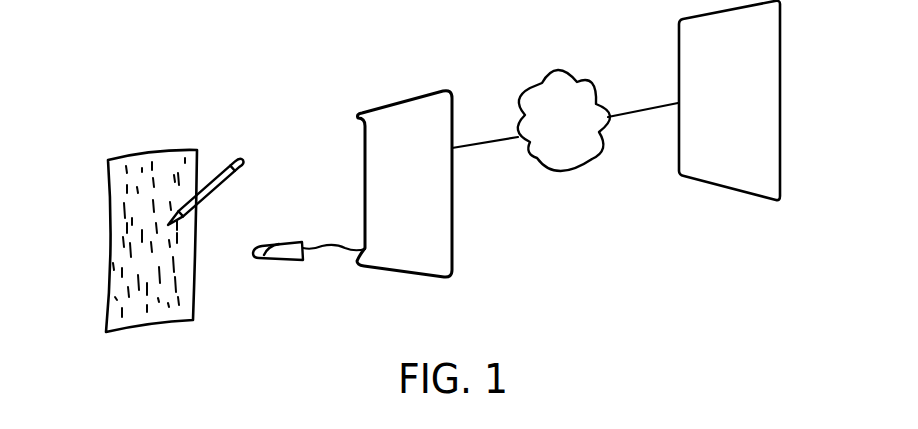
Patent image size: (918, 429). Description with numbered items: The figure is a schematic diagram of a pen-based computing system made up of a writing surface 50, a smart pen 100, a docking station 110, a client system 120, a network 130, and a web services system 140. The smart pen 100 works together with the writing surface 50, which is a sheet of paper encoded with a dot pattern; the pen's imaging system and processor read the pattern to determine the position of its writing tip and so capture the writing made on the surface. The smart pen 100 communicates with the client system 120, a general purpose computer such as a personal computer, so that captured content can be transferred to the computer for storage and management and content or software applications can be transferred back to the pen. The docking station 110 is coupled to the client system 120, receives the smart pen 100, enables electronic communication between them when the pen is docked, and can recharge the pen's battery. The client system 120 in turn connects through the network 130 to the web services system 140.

The writing surface 50 is at (127, 232).
The smart pen 100 is at (226, 164).
The docking station 110 is at (294, 245).
The client system 120 is at (408, 128).
The network 130 is at (577, 135).
The web services system 140 is at (743, 141).